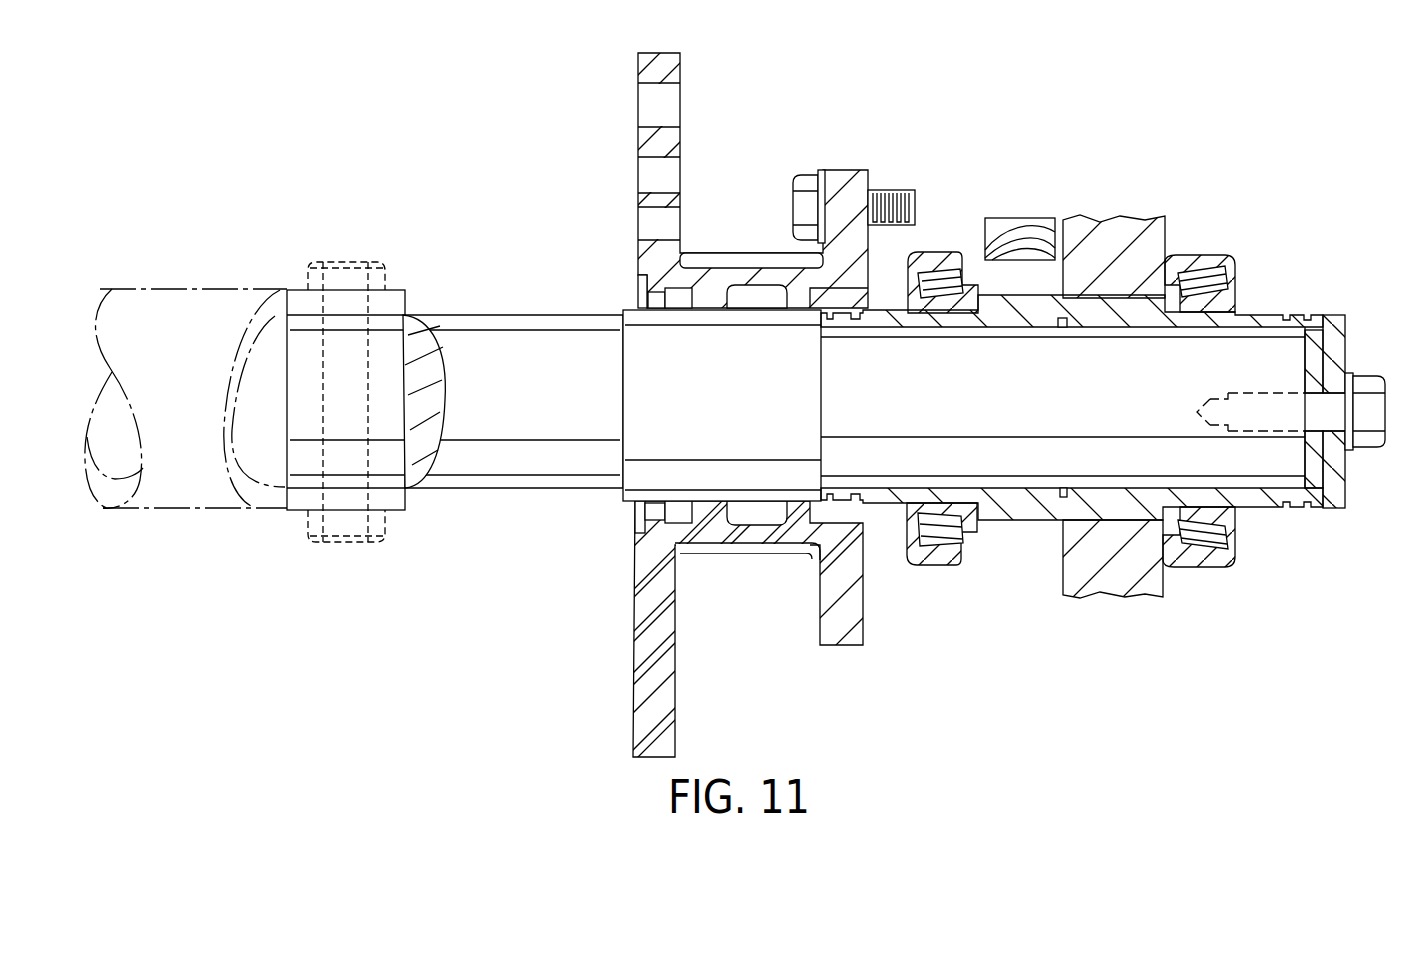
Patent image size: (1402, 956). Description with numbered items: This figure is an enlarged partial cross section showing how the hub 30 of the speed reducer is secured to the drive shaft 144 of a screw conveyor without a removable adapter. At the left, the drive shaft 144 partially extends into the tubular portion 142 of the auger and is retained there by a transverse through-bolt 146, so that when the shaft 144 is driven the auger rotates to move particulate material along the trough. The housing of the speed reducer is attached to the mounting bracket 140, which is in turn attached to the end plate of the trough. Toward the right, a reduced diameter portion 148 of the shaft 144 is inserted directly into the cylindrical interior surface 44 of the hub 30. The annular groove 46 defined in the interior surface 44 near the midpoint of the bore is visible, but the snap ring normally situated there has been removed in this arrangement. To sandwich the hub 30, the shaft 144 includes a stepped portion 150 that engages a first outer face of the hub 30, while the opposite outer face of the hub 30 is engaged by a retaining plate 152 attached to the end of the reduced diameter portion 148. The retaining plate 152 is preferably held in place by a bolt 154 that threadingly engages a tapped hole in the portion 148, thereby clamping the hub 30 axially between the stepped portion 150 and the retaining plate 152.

The hub 30 is at (990, 520).
The cylindrical interior surface 44 is at (1250, 343).
The annular groove 46 is at (1050, 325).
The mounting bracket 140 is at (676, 670).
The tubular portion 142 is at (193, 488).
The drive shaft 144 is at (508, 420).
The bolt 146 is at (377, 262).
The reduced diameter portion 148 is at (977, 413).
The stepped portion 150 is at (740, 409).
The retaining plate 152 is at (1348, 340).
The bolt 154 is at (1385, 412).